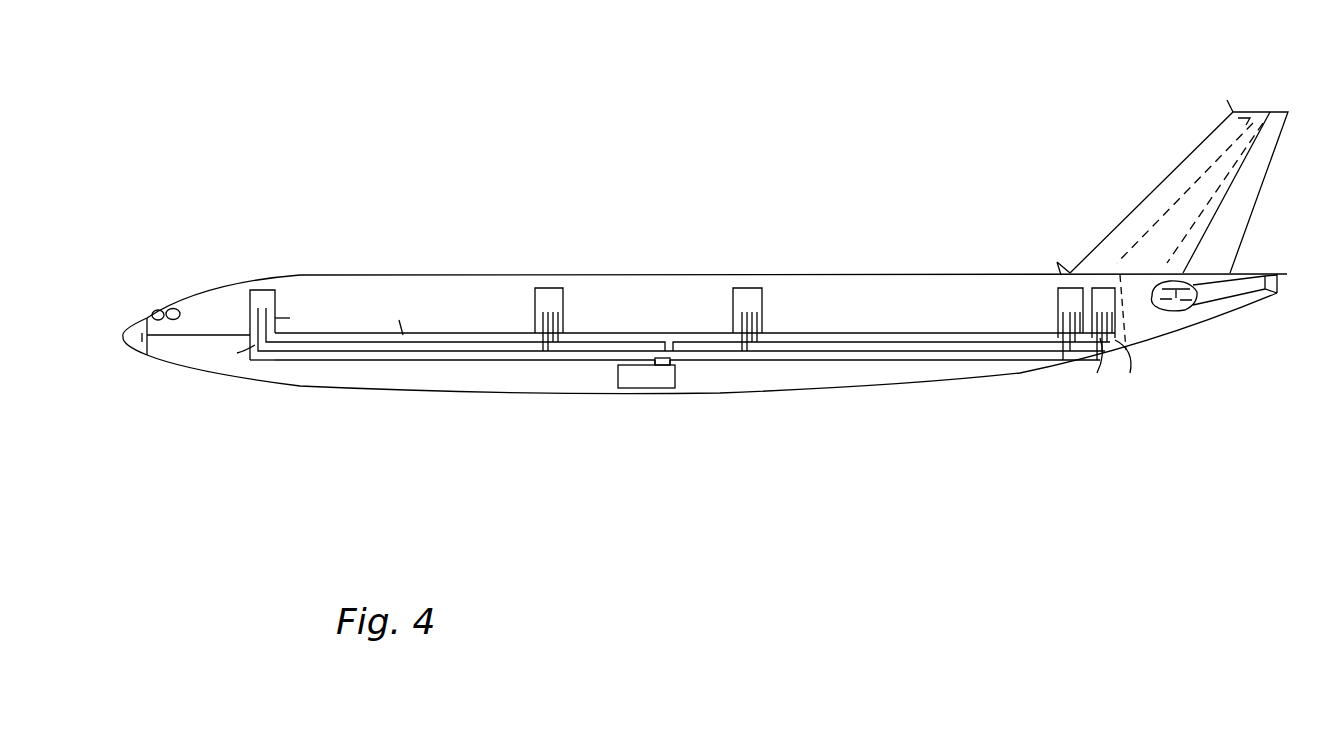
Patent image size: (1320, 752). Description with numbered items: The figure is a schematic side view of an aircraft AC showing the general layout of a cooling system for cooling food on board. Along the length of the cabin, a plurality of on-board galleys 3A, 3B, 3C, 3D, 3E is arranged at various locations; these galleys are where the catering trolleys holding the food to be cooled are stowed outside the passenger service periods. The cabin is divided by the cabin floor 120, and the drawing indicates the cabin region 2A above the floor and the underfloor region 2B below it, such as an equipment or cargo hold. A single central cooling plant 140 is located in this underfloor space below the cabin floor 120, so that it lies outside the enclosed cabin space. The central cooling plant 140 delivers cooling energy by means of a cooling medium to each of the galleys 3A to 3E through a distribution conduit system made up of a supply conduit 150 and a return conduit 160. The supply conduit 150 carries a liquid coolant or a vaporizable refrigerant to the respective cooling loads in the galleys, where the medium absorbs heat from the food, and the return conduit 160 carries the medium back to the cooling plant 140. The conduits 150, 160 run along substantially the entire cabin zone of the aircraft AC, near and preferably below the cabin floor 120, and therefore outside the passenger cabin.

The aircraft AC is at (967, 118).
The upper cabin zone 2A is at (348, 297).
The lower cabin zone 2B is at (366, 375).
The on-board galley 3A is at (260, 298).
The on-board galley 3B is at (548, 296).
The on-board galley 3C is at (752, 296).
The on-board galley 3D is at (1065, 295).
The on-board galley 3E is at (1097, 295).
The cabin floor 120 is at (192, 337).
The central cooling plant 140 is at (636, 383).
The supply conduit 150 is at (893, 343).
The return conduit 160 is at (283, 363).